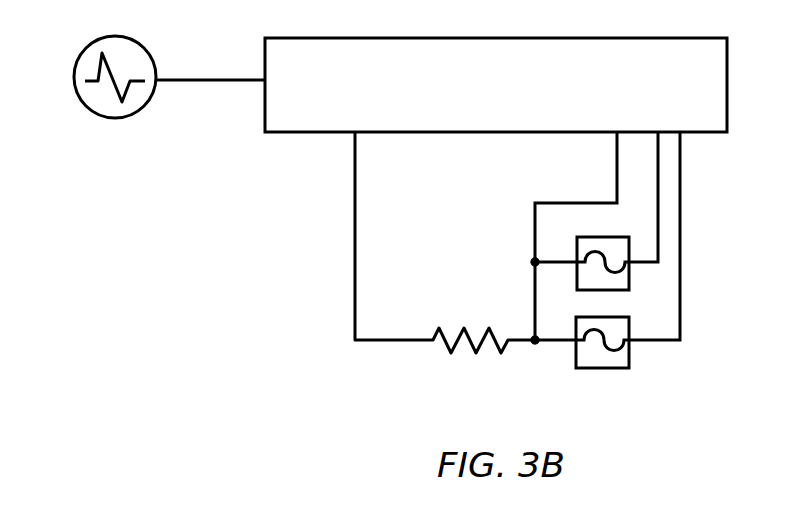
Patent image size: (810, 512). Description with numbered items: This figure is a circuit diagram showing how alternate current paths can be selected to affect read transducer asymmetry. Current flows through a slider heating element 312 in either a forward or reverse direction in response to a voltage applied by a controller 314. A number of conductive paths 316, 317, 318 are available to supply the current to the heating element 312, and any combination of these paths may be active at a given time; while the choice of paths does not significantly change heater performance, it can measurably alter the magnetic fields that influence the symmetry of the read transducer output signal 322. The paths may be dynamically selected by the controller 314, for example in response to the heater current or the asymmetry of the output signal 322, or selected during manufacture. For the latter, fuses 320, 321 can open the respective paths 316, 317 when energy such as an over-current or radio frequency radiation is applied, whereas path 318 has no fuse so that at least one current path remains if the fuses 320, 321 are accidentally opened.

The heating element 312 is at (452, 353).
The controller 314 is at (524, 105).
The conductive path 316 is at (670, 342).
The conductive path 317 is at (660, 238).
The conductive path 318 is at (617, 143).
The fuse 320 is at (607, 370).
The fuse 321 is at (577, 277).
The read transducer output signal 322 is at (105, 112).